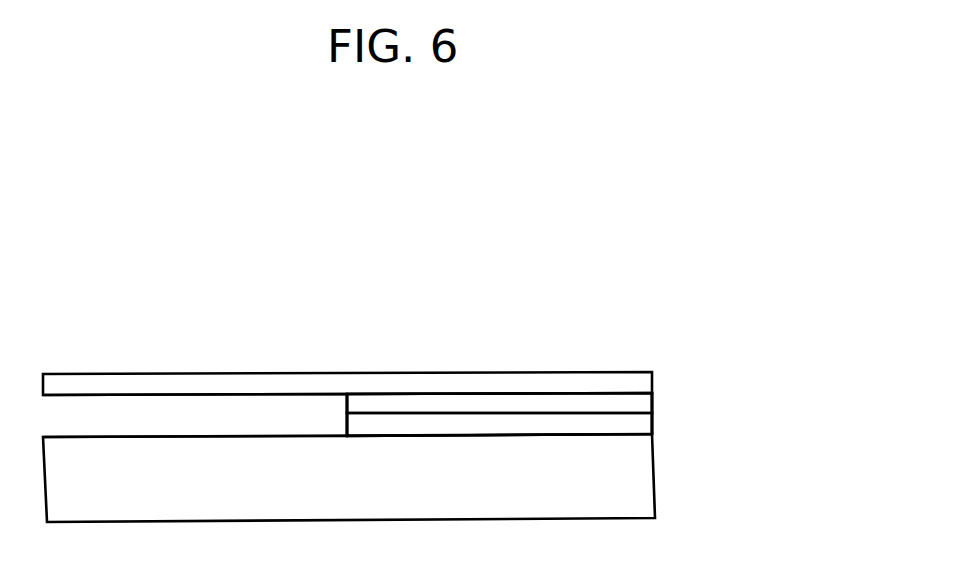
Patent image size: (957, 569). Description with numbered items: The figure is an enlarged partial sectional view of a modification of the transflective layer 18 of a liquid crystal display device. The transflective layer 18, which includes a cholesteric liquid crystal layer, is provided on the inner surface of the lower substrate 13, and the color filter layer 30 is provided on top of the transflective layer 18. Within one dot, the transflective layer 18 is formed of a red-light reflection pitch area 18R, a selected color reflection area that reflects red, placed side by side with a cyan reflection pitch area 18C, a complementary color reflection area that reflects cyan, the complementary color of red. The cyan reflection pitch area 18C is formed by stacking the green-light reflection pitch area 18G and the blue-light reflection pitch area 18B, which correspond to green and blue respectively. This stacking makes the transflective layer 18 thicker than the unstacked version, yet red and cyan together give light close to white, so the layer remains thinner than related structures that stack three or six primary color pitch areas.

The lower substrate 13 is at (630, 477).
The color filter layer 30 is at (655, 375).
The transflective layer 18 is at (680, 412).
The red-light reflection pitch area 18R is at (193, 413).
The cyan reflection pitch area 18C is at (570, 232).
The green-light reflection pitch area 18G is at (408, 403).
The blue-light reflection pitch area 18B is at (537, 423).